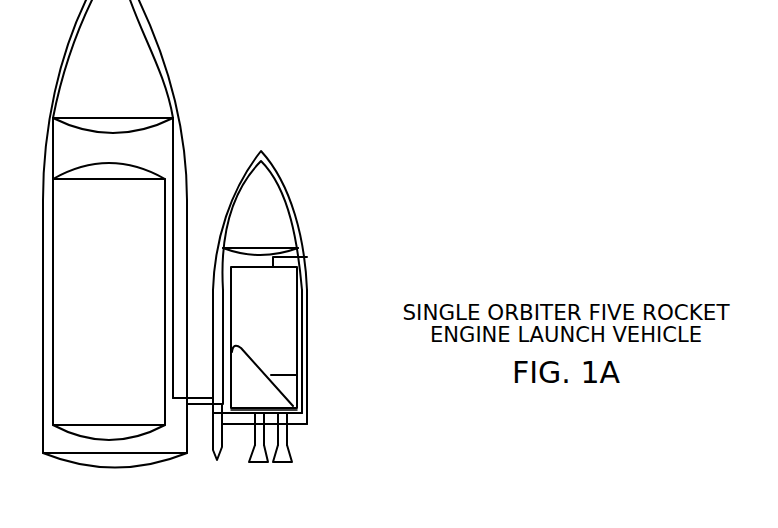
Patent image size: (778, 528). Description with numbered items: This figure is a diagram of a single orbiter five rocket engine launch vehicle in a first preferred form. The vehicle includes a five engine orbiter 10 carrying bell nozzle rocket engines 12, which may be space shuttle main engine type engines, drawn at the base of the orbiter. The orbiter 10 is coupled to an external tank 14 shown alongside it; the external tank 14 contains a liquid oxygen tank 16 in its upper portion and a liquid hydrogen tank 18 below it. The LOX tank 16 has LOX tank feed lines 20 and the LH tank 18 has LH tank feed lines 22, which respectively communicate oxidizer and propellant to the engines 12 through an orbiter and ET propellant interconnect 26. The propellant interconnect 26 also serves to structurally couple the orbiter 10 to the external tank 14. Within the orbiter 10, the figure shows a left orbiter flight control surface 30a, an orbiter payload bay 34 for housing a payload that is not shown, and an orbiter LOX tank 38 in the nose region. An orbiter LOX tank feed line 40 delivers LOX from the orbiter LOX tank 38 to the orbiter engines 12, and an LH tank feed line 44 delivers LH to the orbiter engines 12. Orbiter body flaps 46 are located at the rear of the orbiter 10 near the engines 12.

The five engine orbiter 10 is at (309, 293).
The rocket engines 12 is at (295, 455).
The external tank 14 is at (170, 62).
The liquid oxygen tank 16 is at (140, 12).
The liquid hydrogen tank 18 is at (88, 438).
The LOX tank feed lines 20 is at (173, 123).
The LH tank feed lines 22 is at (173, 407).
The orbiter and ET propellant interconnect 26 is at (197, 397).
The left orbiter flight control surface 30a is at (255, 358).
The orbiter payload bay 34 is at (299, 318).
The orbiter LOX tank 38 is at (283, 190).
The orbiter LOX tank feed line 40 is at (307, 258).
The LH tank feed line 44 is at (286, 416).
The orbiter body flaps 46 is at (223, 446).